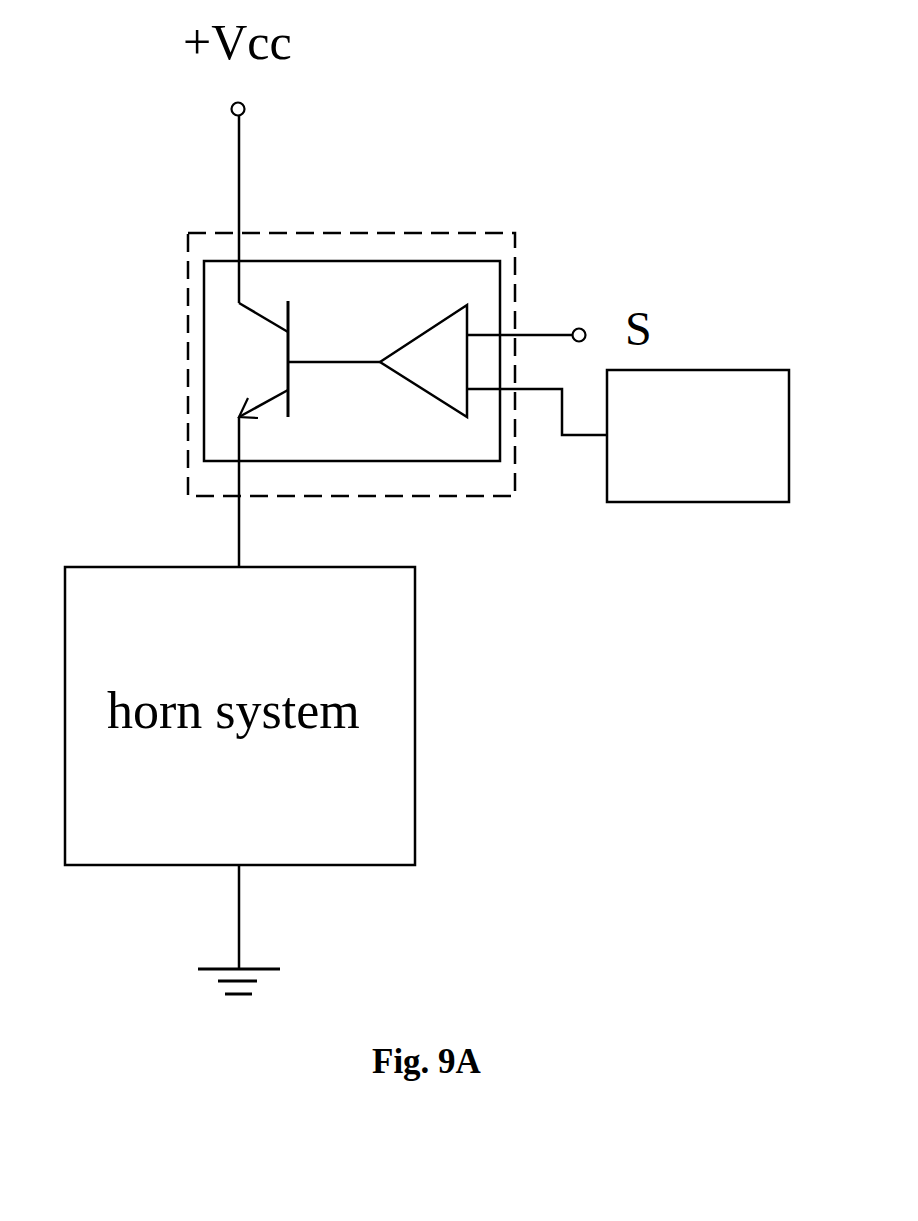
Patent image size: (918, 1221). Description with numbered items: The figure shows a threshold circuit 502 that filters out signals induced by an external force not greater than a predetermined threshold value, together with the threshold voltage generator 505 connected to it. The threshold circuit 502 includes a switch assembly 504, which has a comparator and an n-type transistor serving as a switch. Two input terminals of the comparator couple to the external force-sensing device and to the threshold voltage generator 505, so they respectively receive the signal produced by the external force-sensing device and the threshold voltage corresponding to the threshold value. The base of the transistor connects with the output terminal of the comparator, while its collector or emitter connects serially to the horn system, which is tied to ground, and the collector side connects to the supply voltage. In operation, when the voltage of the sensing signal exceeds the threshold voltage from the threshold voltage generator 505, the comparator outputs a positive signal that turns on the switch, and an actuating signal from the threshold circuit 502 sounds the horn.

The threshold circuit 502 is at (378, 233).
The switch assembly 504 is at (433, 259).
The threshold voltage generator 505 is at (666, 502).